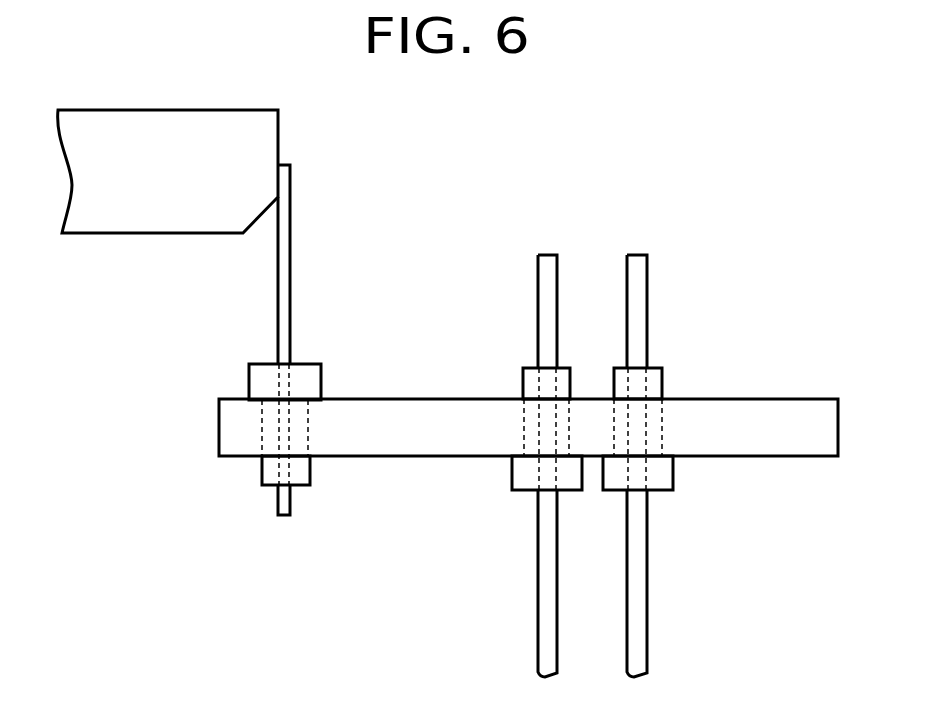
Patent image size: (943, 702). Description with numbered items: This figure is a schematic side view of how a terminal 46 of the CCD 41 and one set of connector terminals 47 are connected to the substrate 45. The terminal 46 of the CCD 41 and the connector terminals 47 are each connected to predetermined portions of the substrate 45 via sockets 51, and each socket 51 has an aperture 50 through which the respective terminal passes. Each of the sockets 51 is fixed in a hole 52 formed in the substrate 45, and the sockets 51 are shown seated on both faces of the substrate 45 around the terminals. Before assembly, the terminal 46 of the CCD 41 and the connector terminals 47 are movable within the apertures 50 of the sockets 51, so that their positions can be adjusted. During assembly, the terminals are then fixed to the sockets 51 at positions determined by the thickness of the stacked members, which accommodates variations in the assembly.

The CCD 41 is at (133, 213).
The substrate 45 is at (808, 415).
The terminal 46 is at (292, 237).
The connector terminals 47 is at (538, 598).
The aperture 50 is at (285, 480).
The socket 51 is at (263, 480).
The hole 52 is at (262, 400).